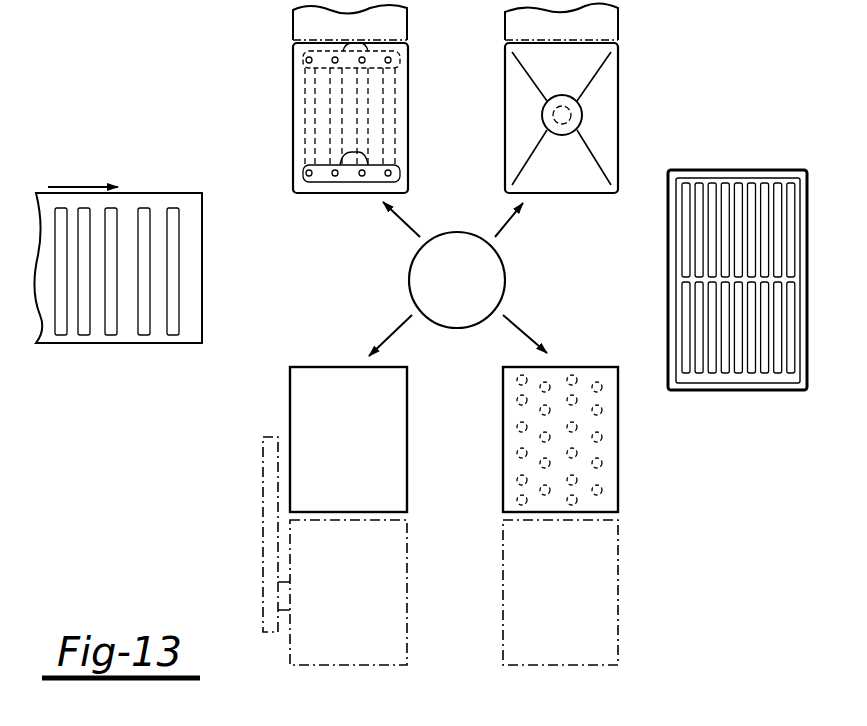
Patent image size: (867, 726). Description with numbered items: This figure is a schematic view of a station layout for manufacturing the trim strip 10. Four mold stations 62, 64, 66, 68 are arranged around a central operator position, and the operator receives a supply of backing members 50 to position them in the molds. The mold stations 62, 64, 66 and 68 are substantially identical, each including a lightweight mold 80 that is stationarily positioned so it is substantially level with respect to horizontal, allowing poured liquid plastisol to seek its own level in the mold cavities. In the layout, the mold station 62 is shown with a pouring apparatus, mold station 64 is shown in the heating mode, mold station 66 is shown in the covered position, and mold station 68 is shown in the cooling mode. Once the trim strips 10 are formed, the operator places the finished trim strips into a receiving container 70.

The trim strip 10 is at (760, 188).
The backing member 50 is at (108, 330).
The mold station 62 is at (299, 197).
The mold station 64 is at (303, 363).
The mold station 66 is at (609, 198).
The mold station 68 is at (602, 330).
The receiving container 70 is at (755, 392).
The mold 80 is at (404, 200).